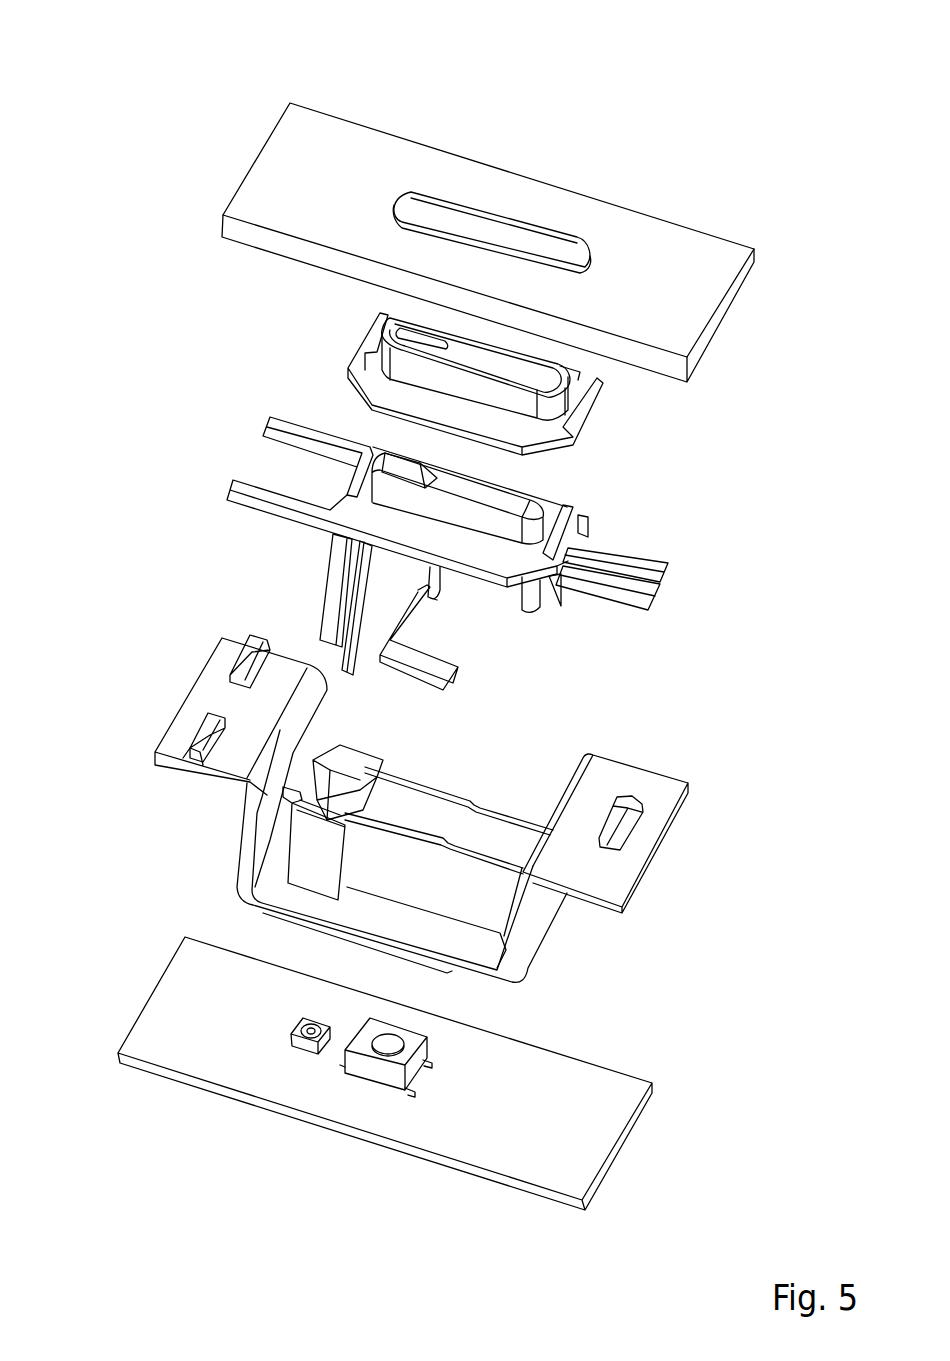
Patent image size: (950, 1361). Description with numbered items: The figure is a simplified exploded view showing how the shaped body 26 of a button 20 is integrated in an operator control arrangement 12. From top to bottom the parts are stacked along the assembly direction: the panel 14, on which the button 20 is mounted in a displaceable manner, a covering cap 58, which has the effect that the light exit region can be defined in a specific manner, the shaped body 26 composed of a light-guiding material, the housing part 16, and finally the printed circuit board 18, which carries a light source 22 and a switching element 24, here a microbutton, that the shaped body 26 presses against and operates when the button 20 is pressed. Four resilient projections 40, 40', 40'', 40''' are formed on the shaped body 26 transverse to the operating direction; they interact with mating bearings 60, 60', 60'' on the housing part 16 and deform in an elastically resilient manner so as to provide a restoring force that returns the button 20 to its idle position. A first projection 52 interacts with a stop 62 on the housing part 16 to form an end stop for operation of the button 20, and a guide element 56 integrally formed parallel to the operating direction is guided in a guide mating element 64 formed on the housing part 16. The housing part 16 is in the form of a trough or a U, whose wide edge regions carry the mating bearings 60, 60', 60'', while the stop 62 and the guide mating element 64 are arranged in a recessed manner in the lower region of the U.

The operator control arrangement 12 is at (127, 138).
The panel 14 is at (650, 244).
The housing part 16 is at (627, 775).
The printed circuit board 18 is at (310, 1117).
The button 20 is at (288, 360).
The light source 22 is at (305, 1042).
The switching element 24 is at (425, 1066).
The shaped body 26 is at (473, 527).
The resilient projection 40 is at (351, 523).
The resilient projection 40' is at (246, 441).
The resilient projection 40'' is at (665, 565).
The resilient projection 40''' is at (668, 600).
The first projection 52 is at (437, 586).
The guide element 56 is at (352, 607).
The covering cap 58 is at (547, 432).
The mating bearing 60 is at (155, 726).
The mating bearing 60' is at (183, 651).
The mating bearing 60'' is at (685, 823).
The stop 62 is at (417, 823).
The guide mating element 64 is at (312, 868).